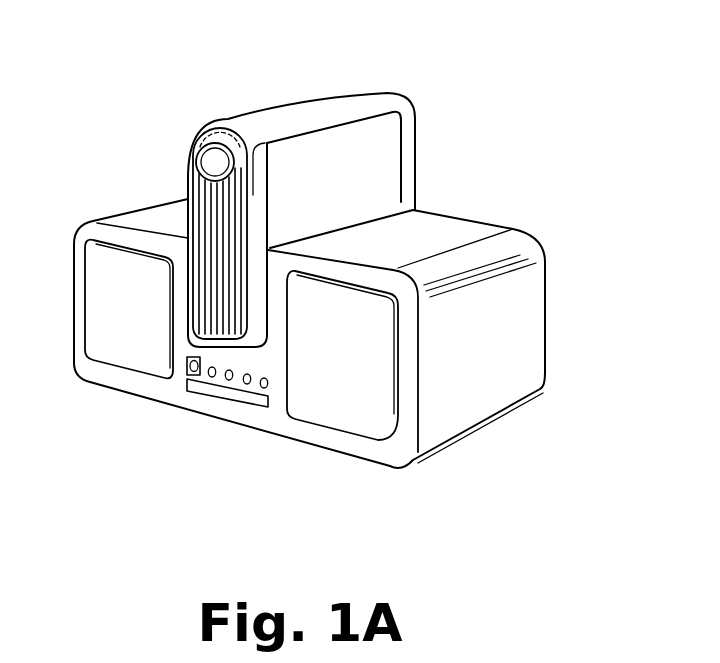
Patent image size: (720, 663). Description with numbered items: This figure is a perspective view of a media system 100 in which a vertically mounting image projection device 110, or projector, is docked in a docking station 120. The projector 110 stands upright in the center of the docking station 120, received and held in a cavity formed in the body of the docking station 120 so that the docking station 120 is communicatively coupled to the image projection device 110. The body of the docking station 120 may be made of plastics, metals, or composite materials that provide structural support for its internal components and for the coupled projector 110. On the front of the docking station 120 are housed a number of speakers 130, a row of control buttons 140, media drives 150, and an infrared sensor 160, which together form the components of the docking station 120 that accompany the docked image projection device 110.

The media system 100 is at (150, 88).
The image projection device 110 is at (270, 108).
The docking station 120 is at (522, 305).
The speakers 130 is at (348, 368).
The control buttons 140 is at (265, 389).
The media drives 150 is at (233, 396).
The infrared sensor 160 is at (187, 375).